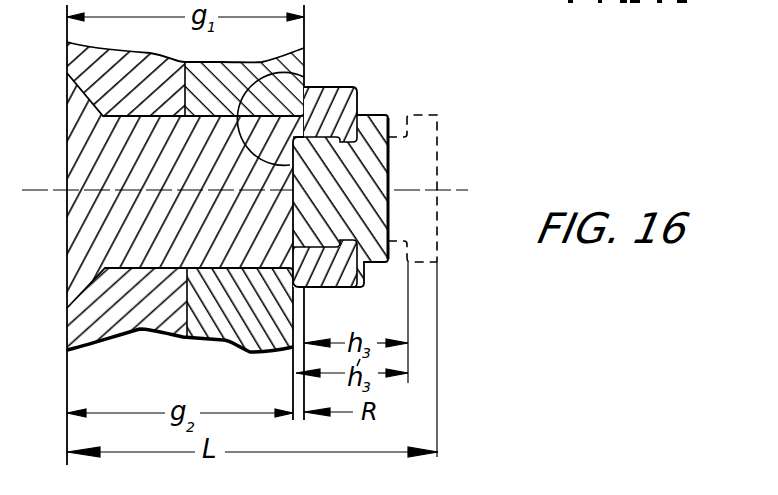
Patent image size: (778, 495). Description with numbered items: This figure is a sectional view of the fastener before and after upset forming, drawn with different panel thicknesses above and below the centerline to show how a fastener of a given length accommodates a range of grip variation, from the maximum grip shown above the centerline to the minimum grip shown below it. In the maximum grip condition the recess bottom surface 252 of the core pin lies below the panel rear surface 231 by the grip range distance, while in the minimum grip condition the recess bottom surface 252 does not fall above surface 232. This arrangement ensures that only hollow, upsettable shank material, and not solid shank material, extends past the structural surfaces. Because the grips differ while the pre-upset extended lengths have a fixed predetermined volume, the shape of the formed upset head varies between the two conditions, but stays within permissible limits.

The panel rear surface 231 is at (306, 70).
The recess bottom surface 252 is at (306, 77).
The surface 232 is at (300, 312).